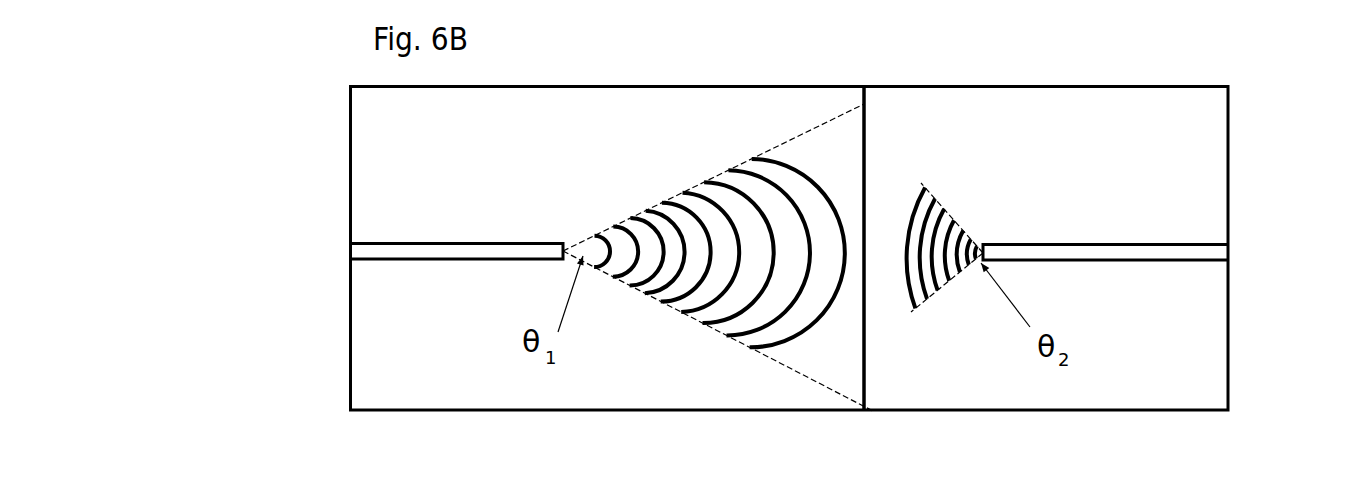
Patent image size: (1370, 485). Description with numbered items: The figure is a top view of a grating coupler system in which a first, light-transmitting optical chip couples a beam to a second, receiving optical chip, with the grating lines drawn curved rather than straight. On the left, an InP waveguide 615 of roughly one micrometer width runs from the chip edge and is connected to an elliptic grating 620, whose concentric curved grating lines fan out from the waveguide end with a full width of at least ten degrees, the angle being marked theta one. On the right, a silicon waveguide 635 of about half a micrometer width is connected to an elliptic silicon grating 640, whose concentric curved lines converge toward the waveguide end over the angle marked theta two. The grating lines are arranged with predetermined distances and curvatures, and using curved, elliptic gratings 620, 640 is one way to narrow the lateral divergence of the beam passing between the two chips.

The InP waveguide 615 is at (407, 248).
The elliptic grating 620 is at (660, 232).
The elliptic silicon grating 640 is at (941, 219).
The silicon waveguide 635 is at (1207, 248).